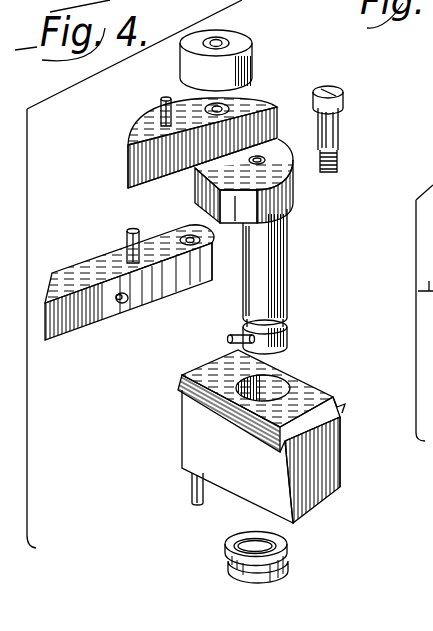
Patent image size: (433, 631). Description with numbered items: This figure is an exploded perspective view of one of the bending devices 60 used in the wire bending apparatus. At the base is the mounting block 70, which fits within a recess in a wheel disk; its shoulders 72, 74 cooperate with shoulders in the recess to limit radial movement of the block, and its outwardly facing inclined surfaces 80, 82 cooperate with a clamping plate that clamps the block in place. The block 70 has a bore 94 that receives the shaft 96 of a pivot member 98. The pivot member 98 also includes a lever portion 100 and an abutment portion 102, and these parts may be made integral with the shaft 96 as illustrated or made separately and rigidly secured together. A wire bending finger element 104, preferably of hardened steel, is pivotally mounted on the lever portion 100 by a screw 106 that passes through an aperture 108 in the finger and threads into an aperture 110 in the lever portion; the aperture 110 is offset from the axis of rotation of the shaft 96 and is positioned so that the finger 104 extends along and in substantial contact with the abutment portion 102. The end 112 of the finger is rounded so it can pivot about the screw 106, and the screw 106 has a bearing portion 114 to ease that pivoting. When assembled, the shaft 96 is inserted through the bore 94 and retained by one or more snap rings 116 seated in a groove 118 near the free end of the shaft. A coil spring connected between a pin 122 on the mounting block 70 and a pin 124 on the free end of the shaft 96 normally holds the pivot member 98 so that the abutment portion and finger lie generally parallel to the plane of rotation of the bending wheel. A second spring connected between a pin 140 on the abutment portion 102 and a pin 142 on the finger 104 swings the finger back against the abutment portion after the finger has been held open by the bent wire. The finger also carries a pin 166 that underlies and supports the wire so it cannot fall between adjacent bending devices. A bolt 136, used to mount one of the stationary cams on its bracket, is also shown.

The bending device 60 is at (291, 102).
The mounting block 70 is at (340, 448).
The shoulder 72 is at (343, 414).
The shoulder 74 is at (280, 451).
The inclined surface 80 is at (344, 404).
The inclined surface 82 is at (181, 382).
The bore 94 is at (276, 381).
The shaft 96 is at (288, 262).
The pivot member 98 is at (127, 145).
The lever portion 100 is at (113, 201).
The abutment portion 102 is at (102, 164).
The wire bending finger element 104 is at (78, 256).
The screw 106 is at (372, 69).
The aperture 108 is at (189, 238).
The aperture 110 is at (286, 165).
The end 112 is at (215, 258).
The bearing portion 114 is at (418, 93).
The snap ring 116 is at (289, 562).
The groove 118 is at (316, 300).
The pin 122 is at (160, 495).
The pin 124 is at (210, 337).
The bolt 136 is at (252, 55).
The pin 140 is at (161, 108).
The pin 142 is at (104, 229).
The pin 166 is at (110, 317).